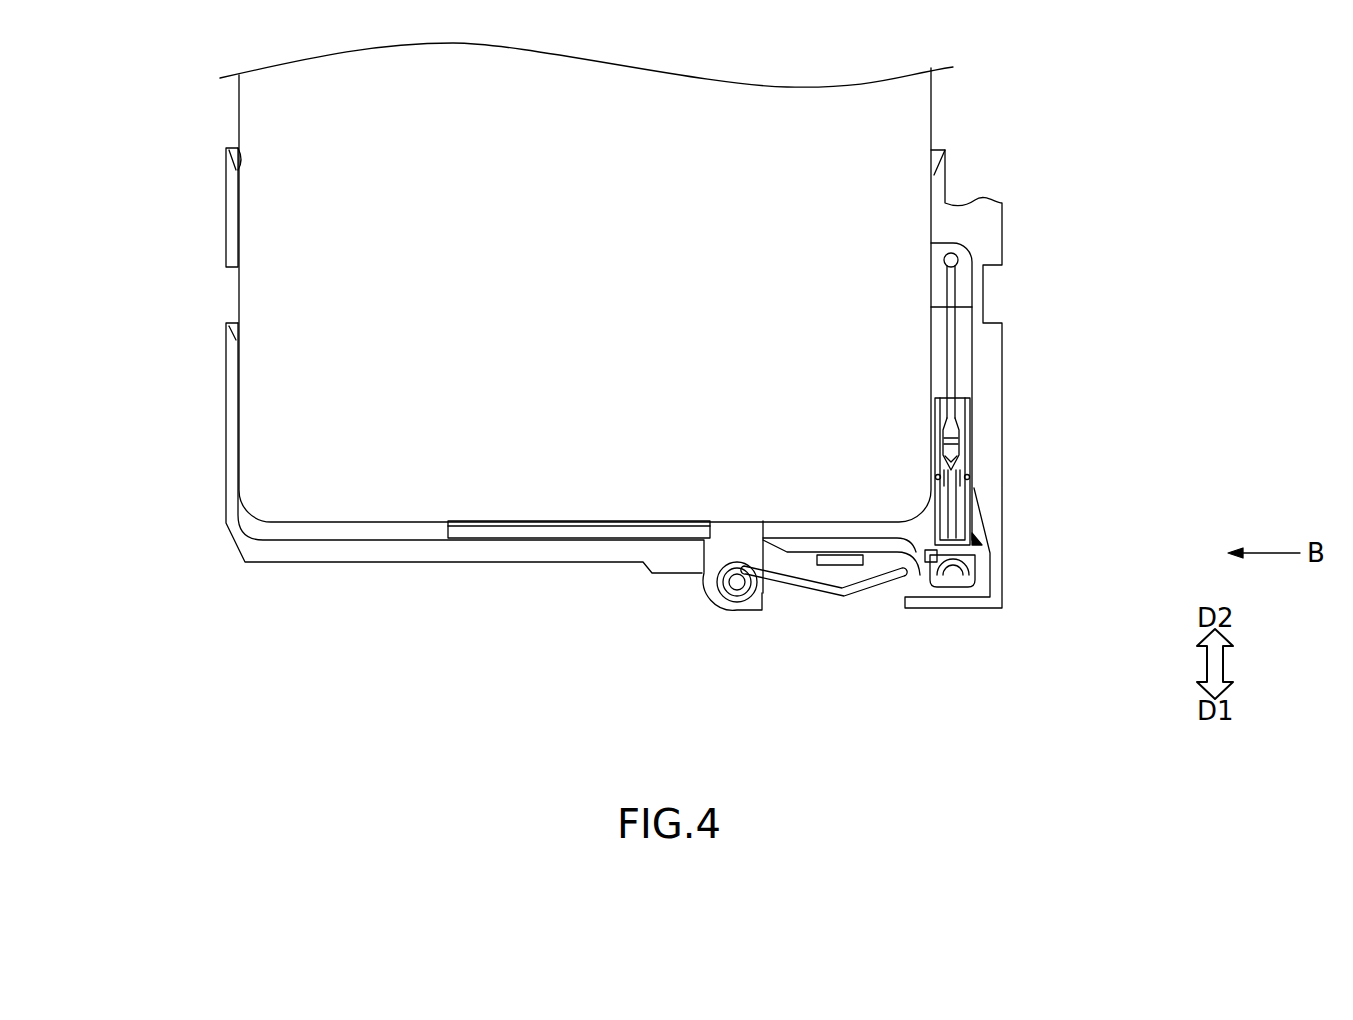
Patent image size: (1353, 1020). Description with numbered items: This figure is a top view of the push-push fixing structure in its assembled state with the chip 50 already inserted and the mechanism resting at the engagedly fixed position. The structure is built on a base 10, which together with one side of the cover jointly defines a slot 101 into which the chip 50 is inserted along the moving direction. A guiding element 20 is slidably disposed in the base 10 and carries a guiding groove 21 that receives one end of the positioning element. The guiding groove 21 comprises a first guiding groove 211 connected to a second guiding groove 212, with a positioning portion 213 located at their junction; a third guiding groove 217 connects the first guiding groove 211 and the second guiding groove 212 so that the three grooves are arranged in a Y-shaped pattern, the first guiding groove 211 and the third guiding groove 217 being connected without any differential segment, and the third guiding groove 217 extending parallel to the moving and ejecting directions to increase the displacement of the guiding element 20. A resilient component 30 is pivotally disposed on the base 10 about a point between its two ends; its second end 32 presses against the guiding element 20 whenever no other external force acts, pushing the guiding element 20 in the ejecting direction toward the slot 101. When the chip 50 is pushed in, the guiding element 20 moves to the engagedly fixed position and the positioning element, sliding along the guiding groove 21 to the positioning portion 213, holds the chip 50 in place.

The base 10 is at (983, 371).
The guiding element 20 is at (975, 548).
The guiding groove 21 is at (965, 425).
The first guiding groove 211 is at (960, 475).
The second guiding groove 212 is at (960, 458).
The positioning portion 213 is at (960, 440).
The third guiding groove 217 is at (955, 505).
The resilient component 30 is at (855, 590).
The second end 32 is at (975, 580).
The chip 50 is at (259, 112).
The slot 101 is at (232, 148).